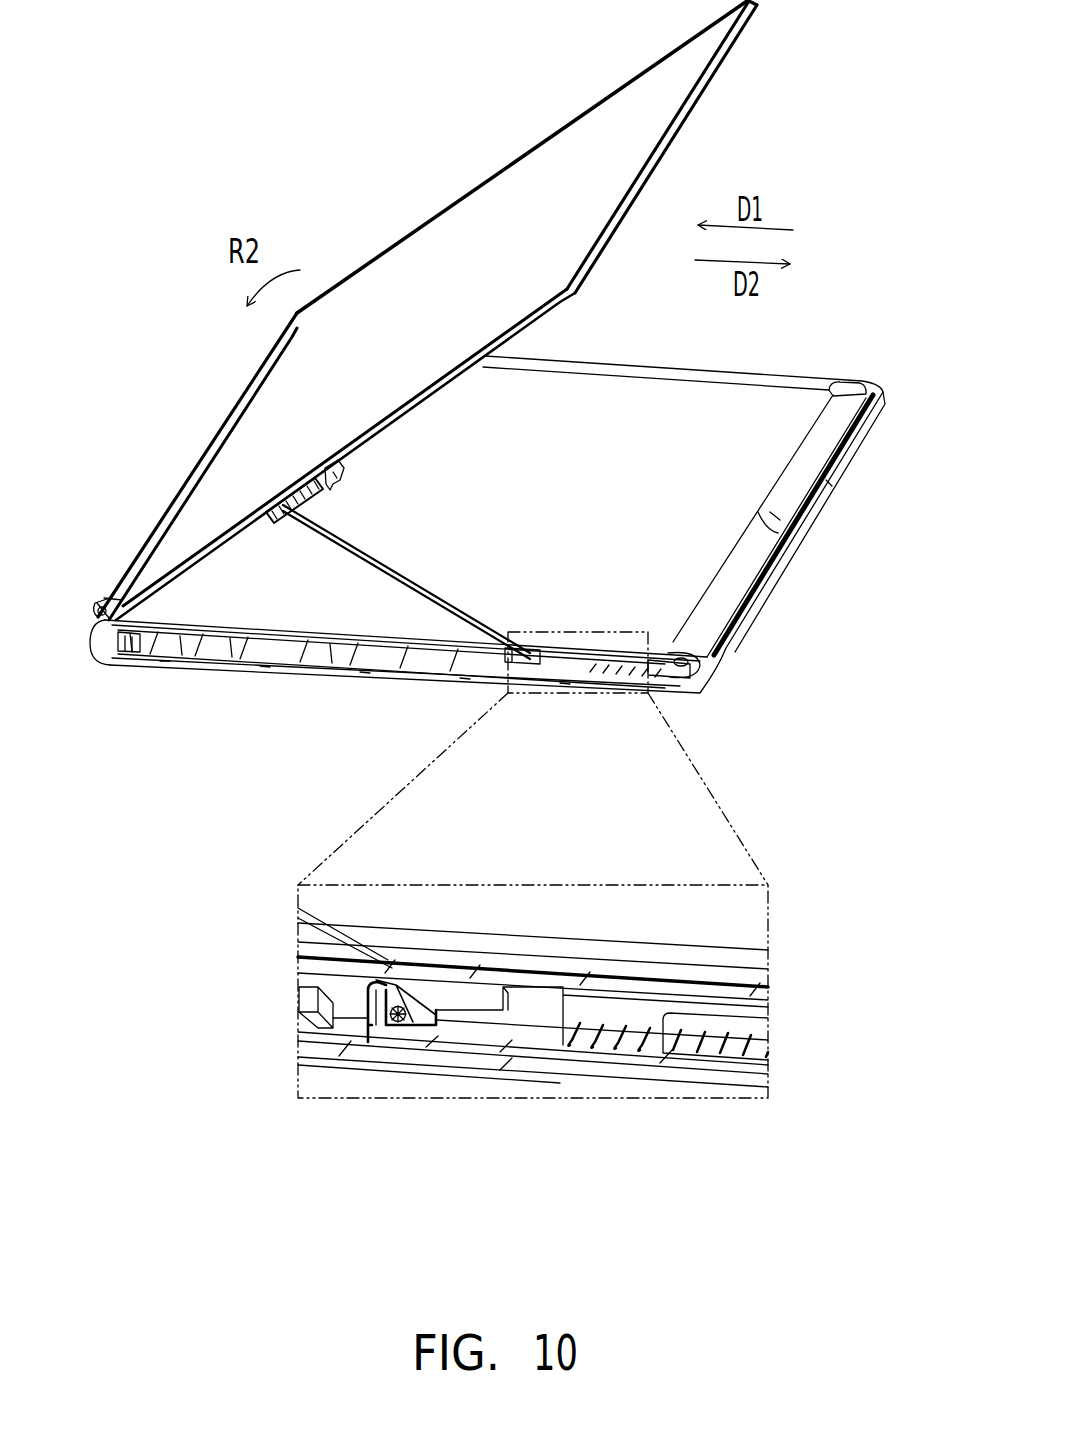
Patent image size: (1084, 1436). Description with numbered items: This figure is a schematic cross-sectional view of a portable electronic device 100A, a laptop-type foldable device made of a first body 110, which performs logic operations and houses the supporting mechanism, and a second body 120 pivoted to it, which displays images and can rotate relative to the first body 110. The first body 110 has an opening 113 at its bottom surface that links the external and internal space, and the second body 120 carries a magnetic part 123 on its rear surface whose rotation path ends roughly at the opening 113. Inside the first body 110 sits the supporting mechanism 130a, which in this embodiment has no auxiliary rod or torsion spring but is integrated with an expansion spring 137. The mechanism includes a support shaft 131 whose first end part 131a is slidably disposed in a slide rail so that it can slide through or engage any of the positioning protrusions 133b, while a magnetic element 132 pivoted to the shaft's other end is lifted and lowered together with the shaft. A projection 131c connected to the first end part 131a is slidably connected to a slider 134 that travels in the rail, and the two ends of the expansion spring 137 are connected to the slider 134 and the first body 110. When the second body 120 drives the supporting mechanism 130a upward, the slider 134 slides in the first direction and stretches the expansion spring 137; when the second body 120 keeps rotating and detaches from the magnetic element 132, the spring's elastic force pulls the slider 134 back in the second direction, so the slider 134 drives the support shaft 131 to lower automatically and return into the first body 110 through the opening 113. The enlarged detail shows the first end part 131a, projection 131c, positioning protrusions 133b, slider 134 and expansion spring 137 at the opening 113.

The second body 120 is at (716, 103).
The first body 110 is at (838, 350).
The portable electronic device 100A is at (886, 710).
The magnetic part 123 is at (283, 480).
The magnetic element 132 is at (268, 493).
The supporting mechanism 130a is at (330, 550).
The support shaft 131 is at (400, 640).
The first end part 131a is at (403, 997).
The projection 131c is at (400, 1030).
The opening 113 is at (592, 968).
The positioning protrusions 133b is at (420, 1030).
The slider 134 is at (530, 1032).
The expansion spring 137 is at (673, 1047).